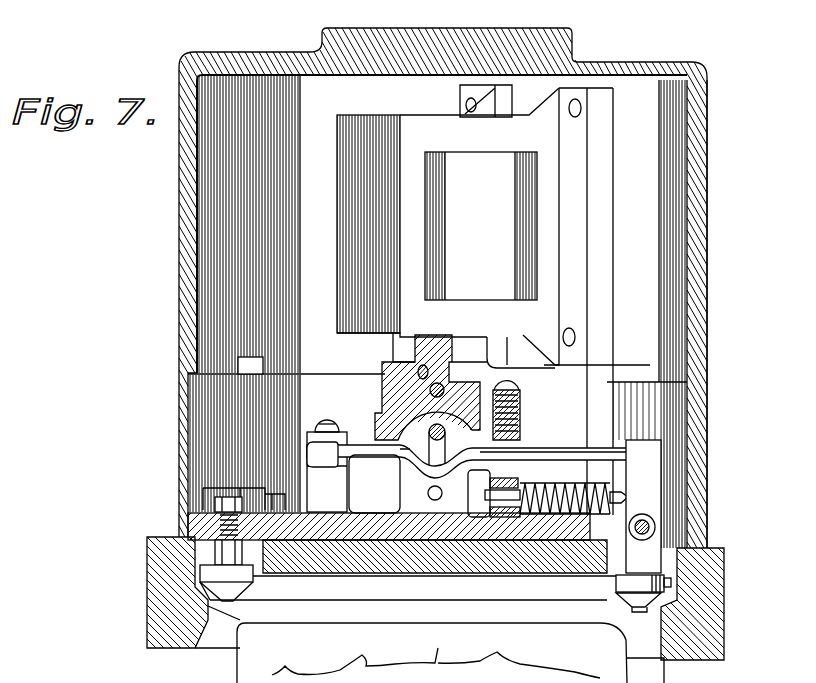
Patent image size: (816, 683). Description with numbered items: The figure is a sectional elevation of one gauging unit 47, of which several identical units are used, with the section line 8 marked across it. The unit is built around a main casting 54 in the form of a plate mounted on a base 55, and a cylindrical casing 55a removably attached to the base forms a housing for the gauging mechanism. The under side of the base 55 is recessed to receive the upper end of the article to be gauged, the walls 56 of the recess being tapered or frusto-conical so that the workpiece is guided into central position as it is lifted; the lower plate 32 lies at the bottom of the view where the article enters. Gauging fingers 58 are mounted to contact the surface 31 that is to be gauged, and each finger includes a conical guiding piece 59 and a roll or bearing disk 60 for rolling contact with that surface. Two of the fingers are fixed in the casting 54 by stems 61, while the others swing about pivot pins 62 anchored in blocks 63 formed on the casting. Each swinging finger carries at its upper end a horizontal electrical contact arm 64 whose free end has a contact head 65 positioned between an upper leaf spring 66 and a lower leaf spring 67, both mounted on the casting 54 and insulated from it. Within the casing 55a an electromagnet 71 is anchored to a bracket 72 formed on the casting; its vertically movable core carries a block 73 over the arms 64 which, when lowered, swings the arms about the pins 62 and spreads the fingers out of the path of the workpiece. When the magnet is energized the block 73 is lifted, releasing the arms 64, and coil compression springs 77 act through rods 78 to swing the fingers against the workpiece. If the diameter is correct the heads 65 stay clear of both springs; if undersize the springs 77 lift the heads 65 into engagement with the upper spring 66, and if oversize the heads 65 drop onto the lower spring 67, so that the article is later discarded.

The section line 8- 8 is at (197, 380).
The surface 31 is at (608, 597).
The base plate 32 is at (620, 669).
The gauging unit 47 is at (720, 252).
The main casting 54 is at (376, 540).
The base 55 is at (147, 555).
The cylindrical casing 55a is at (704, 306).
The walls 56 is at (207, 640).
The gauging fingers 58 is at (254, 576).
The conical guiding piece 59 is at (632, 603).
The roll or bearing disk 60 is at (672, 583).
The stems 61 is at (190, 521).
The pivot pins 62 is at (650, 527).
The blocks 63 is at (675, 508).
The electrical contact arm 64 is at (428, 458).
The contact head 65 is at (323, 460).
The upper leaf spring contact arm 66 is at (340, 423).
The lower leaf spring contact arm 67 is at (345, 475).
The electromagnet 71 is at (370, 120).
The bracket 72 is at (602, 238).
The block 73 is at (390, 374).
The coil compression springs 77 is at (562, 485).
The rods 78 is at (428, 494).